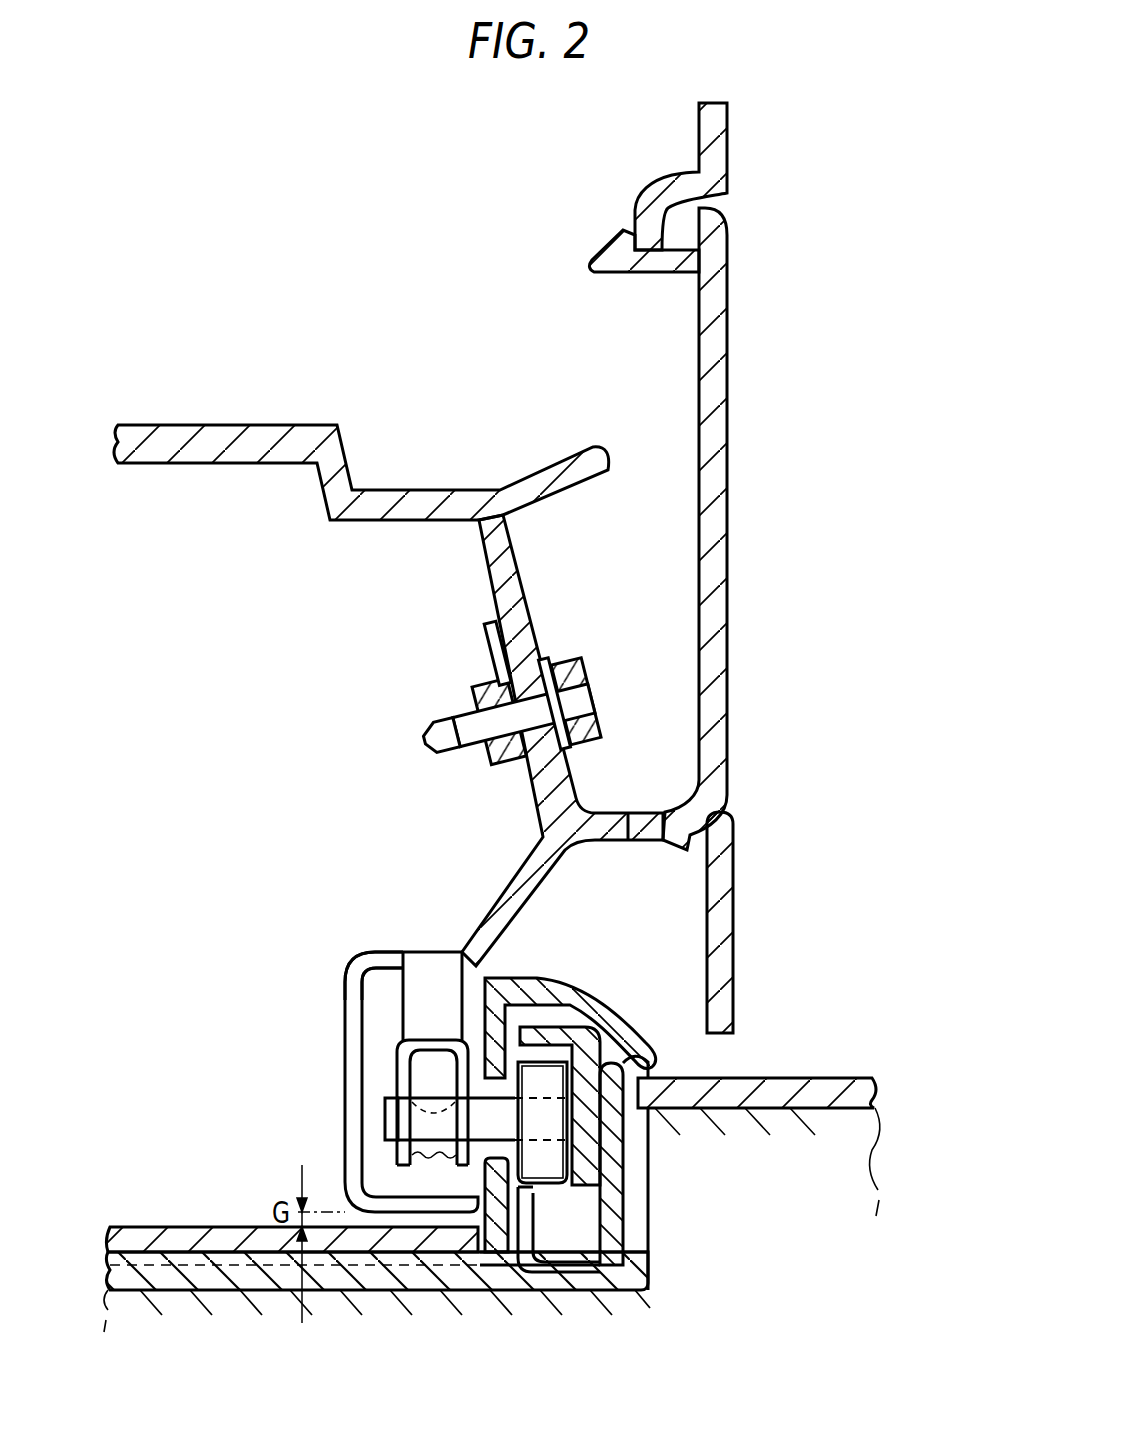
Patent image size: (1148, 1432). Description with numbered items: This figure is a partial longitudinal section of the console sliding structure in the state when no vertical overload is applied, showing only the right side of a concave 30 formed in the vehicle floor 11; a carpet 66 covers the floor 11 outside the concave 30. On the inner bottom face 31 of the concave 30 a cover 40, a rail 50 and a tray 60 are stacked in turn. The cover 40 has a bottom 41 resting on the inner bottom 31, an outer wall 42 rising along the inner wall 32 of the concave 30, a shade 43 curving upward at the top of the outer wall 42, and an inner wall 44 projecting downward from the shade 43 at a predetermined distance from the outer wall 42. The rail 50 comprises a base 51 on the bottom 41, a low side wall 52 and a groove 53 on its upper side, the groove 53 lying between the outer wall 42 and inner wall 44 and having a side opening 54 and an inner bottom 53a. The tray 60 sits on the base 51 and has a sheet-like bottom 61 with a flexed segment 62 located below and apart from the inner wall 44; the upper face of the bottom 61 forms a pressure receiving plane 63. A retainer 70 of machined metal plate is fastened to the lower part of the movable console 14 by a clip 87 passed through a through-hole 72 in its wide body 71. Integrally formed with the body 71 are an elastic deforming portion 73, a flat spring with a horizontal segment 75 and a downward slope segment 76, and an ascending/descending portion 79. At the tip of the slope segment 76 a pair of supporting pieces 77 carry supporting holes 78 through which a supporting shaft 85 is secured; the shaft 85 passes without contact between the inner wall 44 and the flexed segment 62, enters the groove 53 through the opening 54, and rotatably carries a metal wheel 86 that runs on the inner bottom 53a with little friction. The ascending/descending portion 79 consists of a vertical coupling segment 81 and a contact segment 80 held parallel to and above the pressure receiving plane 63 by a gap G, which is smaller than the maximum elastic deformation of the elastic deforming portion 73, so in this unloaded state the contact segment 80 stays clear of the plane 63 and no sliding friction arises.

The floor 11 is at (878, 1115).
The movable console 14 is at (729, 497).
The concave 30 is at (679, 1212).
The inner bottom face 31 is at (636, 1293).
The inner wall 32 is at (679, 1212).
The cover 40 is at (577, 1145).
The bottom 41 is at (455, 1290).
The outer wall 42 is at (655, 1120).
The shade 43 is at (577, 1145).
The inner wall 44 is at (495, 1058).
The rail 50 is at (173, 1270).
The base 51 is at (377, 1306).
The side wall 52 is at (536, 1238).
The groove 53 is at (598, 1022).
The inner bottom 53a is at (642, 1196).
The opening 54 is at (500, 1088).
The tray 60 is at (134, 1234).
The bottom 61 is at (292, 1203).
The flexed segment 62 is at (536, 1212).
The pressure receiving plane 63 is at (490, 1268).
The carpet 66 is at (868, 1078).
The retainer 70 is at (520, 683).
The body 71 is at (533, 775).
The through-hole 72 is at (520, 700).
The elastic deforming portion 73 is at (361, 966).
The horizontal segment 75 is at (425, 950).
The slope segment 76 is at (408, 985).
The supporting piece 77 is at (438, 1156).
The supporting hole 78 is at (430, 1096).
The ascending/descending portion 79 is at (345, 1060).
The contact segment 80 is at (395, 1198).
The coupling segment 81 is at (359, 1082).
The supporting shaft 85 is at (385, 1118).
The wheel 86 is at (525, 1085).
The clip 87 is at (592, 690).